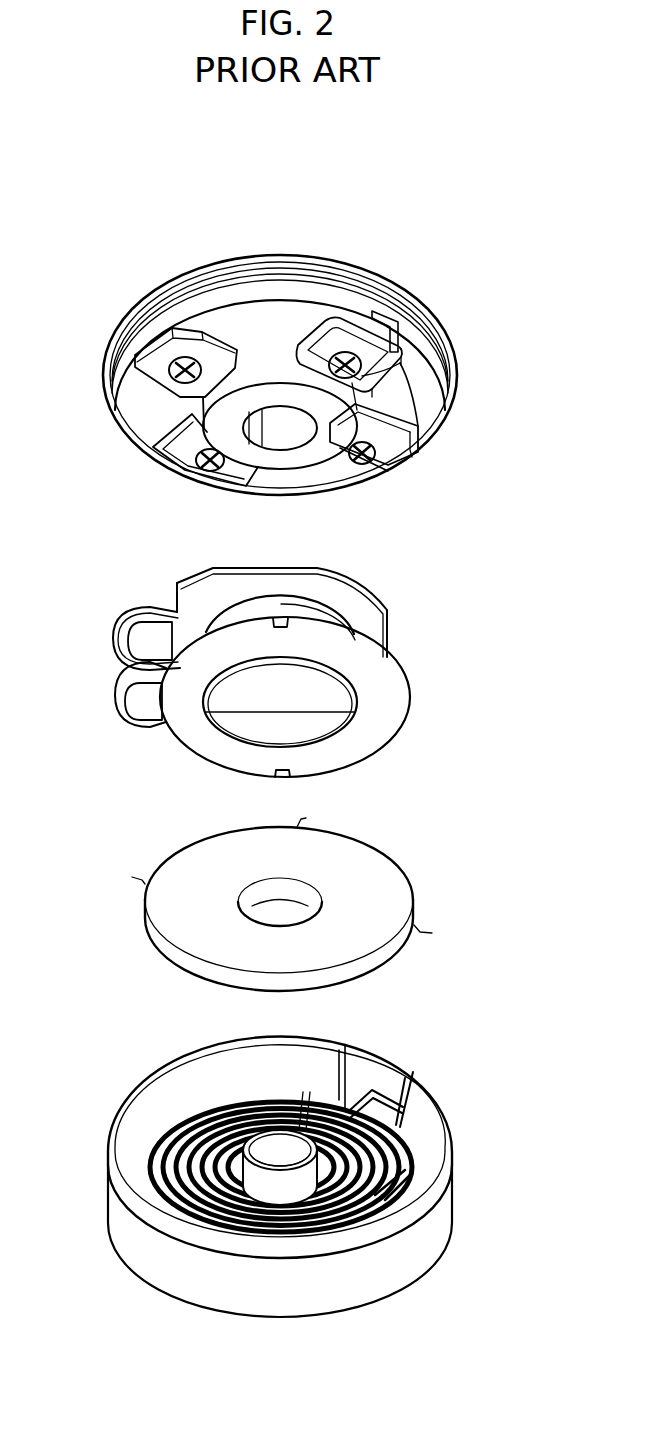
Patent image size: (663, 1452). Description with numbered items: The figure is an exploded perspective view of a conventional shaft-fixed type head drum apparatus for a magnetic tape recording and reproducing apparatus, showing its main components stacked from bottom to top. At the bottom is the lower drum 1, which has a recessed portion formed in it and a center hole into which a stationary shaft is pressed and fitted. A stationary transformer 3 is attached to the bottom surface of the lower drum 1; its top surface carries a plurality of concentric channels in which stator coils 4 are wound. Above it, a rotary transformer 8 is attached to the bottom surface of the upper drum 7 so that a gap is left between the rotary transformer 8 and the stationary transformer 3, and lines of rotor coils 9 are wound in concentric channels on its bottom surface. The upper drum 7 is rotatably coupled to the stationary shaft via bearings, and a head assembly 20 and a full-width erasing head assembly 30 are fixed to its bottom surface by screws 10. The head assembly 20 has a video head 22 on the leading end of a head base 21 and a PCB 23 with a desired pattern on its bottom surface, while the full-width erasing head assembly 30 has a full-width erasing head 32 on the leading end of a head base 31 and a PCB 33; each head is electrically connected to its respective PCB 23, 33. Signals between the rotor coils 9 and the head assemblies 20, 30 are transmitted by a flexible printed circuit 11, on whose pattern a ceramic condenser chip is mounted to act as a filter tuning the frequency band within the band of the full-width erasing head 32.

The lower drum 1 is at (113, 1208).
The stationary transformer 3 is at (177, 1130).
The stator coils 4 is at (156, 1155).
The upper drum 7 is at (167, 312).
The rotary transformer 8 is at (393, 882).
The rotor coils 9 is at (305, 822).
The screws 10 is at (365, 380).
The flexible printed circuit 11 is at (393, 705).
The head assembly 20 is at (424, 331).
The head base 21 is at (326, 332).
The video head 22 is at (395, 320).
The PCB 23 is at (385, 372).
The full-width erasing head assembly 30 is at (425, 410).
The head base 31 is at (417, 428).
The full-width erasing head 32 is at (412, 457).
The PCB 33 is at (390, 450).